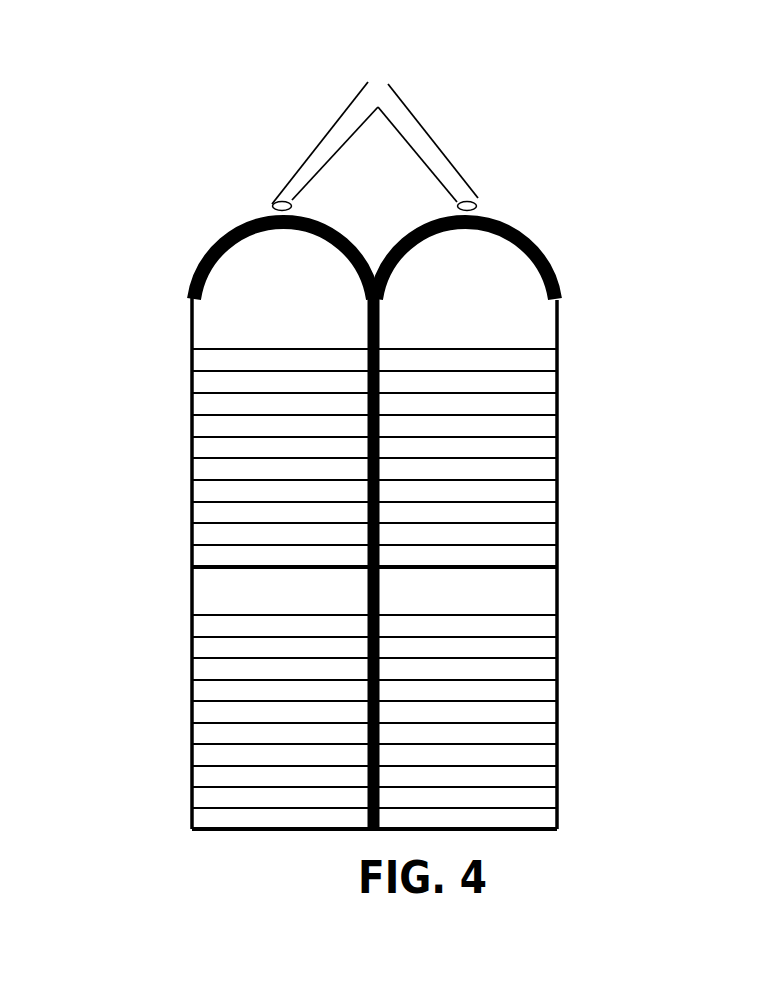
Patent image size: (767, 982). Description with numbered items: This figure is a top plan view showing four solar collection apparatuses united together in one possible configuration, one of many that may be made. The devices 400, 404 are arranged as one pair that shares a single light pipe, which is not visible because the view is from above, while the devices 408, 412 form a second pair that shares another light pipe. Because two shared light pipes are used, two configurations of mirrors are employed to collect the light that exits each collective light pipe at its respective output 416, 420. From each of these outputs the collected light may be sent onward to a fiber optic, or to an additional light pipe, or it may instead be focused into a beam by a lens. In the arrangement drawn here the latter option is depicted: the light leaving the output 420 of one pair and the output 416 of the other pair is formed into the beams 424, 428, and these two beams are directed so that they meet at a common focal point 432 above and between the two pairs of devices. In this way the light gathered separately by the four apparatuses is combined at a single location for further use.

The solar collection apparatus 400 is at (567, 390).
The solar collection apparatus 404 is at (562, 692).
The solar collection apparatus 408 is at (188, 452).
The solar collection apparatus 412 is at (188, 682).
The light pipe output 416 is at (483, 190).
The light pipe output 420 is at (270, 188).
The beam 424 is at (443, 128).
The beam 428 is at (310, 137).
The focal point 432 is at (373, 97).